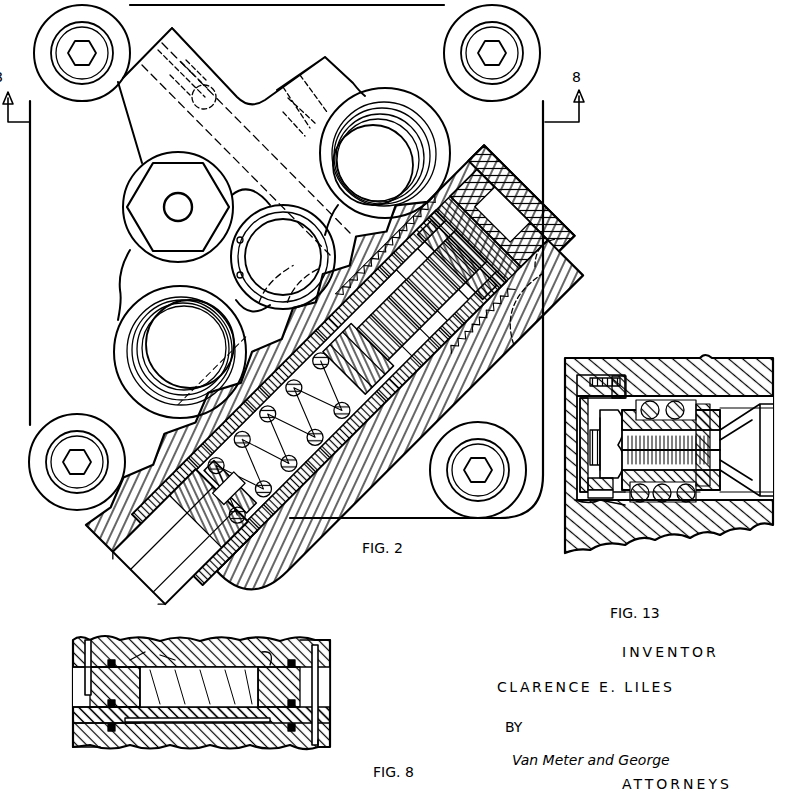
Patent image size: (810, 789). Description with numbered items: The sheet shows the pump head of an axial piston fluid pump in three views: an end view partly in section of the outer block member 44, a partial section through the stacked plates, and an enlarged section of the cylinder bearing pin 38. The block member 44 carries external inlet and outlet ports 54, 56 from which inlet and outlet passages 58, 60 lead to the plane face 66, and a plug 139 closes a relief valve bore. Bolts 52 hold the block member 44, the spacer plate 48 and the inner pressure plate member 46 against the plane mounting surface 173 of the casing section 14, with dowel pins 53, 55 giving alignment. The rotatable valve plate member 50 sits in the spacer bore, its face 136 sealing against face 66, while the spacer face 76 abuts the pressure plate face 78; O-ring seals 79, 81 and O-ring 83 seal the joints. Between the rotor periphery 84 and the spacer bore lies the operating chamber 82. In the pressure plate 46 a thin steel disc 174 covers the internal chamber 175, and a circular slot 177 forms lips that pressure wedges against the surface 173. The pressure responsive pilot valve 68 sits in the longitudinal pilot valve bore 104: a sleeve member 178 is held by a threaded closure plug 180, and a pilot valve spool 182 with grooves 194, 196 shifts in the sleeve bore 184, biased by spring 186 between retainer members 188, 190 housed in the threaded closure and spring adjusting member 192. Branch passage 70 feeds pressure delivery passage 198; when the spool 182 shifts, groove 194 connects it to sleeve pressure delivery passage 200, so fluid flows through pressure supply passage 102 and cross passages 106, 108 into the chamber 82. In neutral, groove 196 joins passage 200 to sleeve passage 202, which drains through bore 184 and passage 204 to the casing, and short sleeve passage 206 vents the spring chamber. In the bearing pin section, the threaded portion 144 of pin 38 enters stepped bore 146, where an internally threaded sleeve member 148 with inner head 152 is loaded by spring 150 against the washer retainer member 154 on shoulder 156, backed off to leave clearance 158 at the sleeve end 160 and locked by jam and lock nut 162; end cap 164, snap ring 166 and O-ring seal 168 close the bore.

In FIG. 8, the casing section 14 is at (201, 692).
In FIG. 13, the cylinder bearing pin 38 is at (770, 522).
In FIG. 2, the outer block member 44 is at (60, 224).
In FIG. 8, the outer block member 44 is at (220, 652).
In FIG. 8, the inner pressure plate member 46 is at (73, 720).
In FIG. 8, the spacer plate 48 is at (115, 687).
In FIG. 8, the rotatable valve plate member 50 is at (199, 687).
In FIG. 2, the bolts 52 is at (97, 40).
In FIG. 8, the dowel pins 53 is at (73, 650).
In FIG. 2, the inlet port 54 is at (165, 337).
In FIG. 8, the dowel pins 55 is at (330, 650).
In FIG. 2, the outlet port 56 is at (383, 138).
In FIG. 2, the inlet passage 58 is at (190, 344).
In FIG. 2, the outlet passage 60 is at (373, 165).
In FIG. 8, the plane face 66 is at (73, 668).
In FIG. 2, the pressure responsive pilot valve 68 is at (390, 414).
In FIG. 2, the branch passage 70 is at (370, 240).
In FIG. 8, the face of spacer 76 is at (73, 707).
In FIG. 8, the face of pressure plate 78 is at (330, 705).
In FIG. 8, the O-ring seal 79 is at (140, 652).
In FIG. 8, the O-ring seal 81 is at (279, 687).
In FIG. 8, the valve plate fluid pressure operating chamber 82 is at (255, 654).
In FIG. 8, the O-ring 83 is at (110, 745).
In FIG. 8, the outer peripheral surface of rotor 84 is at (171, 652).
In FIG. 2, the pressure supply passage 102 is at (222, 133).
In FIG. 2, the longitudinal pilot valve bore 104 is at (430, 362).
In FIG. 2, the branch pressure supply cross passage 106 is at (213, 90).
In FIG. 2, the branch pressure supply cross passage 108 is at (500, 371).
In FIG. 8, the face of valve plate 136 is at (330, 655).
In FIG. 2, the plug 139 is at (178, 207).
In FIG. 13, the threaded portion 144 is at (745, 420).
In FIG. 13, the stepped bore 146 is at (652, 505).
In FIG. 13, the internally threaded sleeve member 148 is at (600, 492).
In FIG. 13, the spring 150 is at (652, 400).
In FIG. 13, the inner head of sleeve 152 is at (640, 400).
In FIG. 13, the disc or washer retainer member 154 is at (700, 505).
In FIG. 13, the shoulder 156 is at (685, 505).
In FIG. 13, the predetermined clearance 158 is at (703, 410).
In FIG. 13, the end of sleeve 160 is at (700, 448).
In FIG. 13, the jam and lock nut 162 is at (584, 495).
In FIG. 13, the end cap 164 is at (585, 550).
In FIG. 13, the snap ring 166 is at (590, 380).
In FIG. 13, the O-ring seal 168 is at (618, 376).
In FIG. 8, the plane mounting surface 173 is at (72, 735).
In FIG. 8, the steel disc 174 is at (170, 748).
In FIG. 8, the internal chamber 175 is at (235, 705).
In FIG. 8, the circular slot 177 is at (258, 748).
In FIG. 2, the sleeve member 178 is at (497, 300).
In FIG. 2, the threaded closure plug 180 is at (553, 228).
In FIG. 2, the pilot valve spool 182 is at (456, 292).
In FIG. 2, the bore of sleeve 184 is at (463, 345).
In FIG. 2, the spring 186 is at (296, 504).
In FIG. 2, the retainer member 188 is at (360, 438).
In FIG. 2, the retainer member 190 is at (178, 538).
In FIG. 2, the threaded closure and spring adjusting member 192 is at (108, 562).
In FIG. 2, the groove 194 is at (408, 224).
In FIG. 2, the groove 196 is at (410, 390).
In FIG. 2, the pressure delivery passage 198 is at (485, 318).
In FIG. 2, the sleeve pressure delivery passage 200 is at (492, 388).
In FIG. 2, the sleeve passage 202 is at (318, 258).
In FIG. 2, the passage 204 is at (300, 322).
In FIG. 2, the short sleeve passage 206 is at (318, 276).